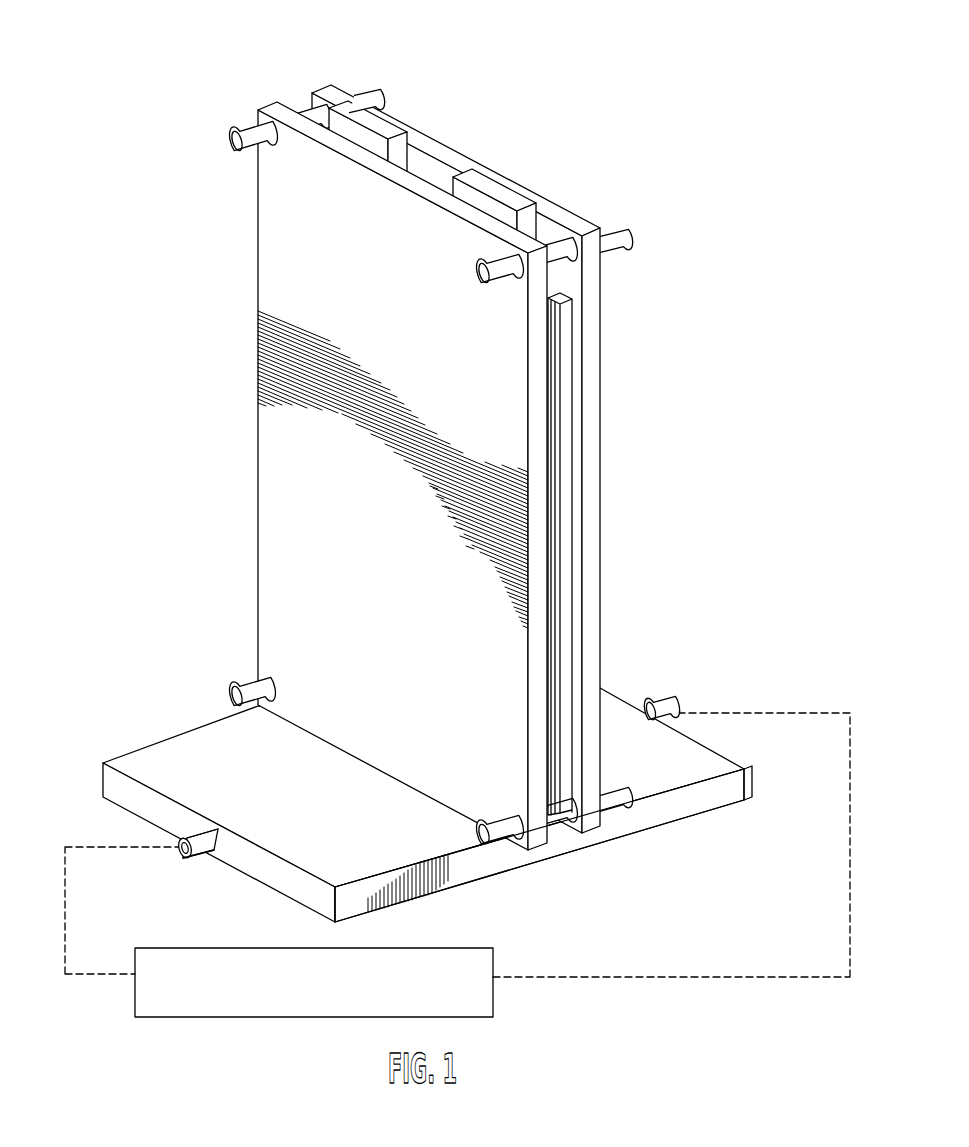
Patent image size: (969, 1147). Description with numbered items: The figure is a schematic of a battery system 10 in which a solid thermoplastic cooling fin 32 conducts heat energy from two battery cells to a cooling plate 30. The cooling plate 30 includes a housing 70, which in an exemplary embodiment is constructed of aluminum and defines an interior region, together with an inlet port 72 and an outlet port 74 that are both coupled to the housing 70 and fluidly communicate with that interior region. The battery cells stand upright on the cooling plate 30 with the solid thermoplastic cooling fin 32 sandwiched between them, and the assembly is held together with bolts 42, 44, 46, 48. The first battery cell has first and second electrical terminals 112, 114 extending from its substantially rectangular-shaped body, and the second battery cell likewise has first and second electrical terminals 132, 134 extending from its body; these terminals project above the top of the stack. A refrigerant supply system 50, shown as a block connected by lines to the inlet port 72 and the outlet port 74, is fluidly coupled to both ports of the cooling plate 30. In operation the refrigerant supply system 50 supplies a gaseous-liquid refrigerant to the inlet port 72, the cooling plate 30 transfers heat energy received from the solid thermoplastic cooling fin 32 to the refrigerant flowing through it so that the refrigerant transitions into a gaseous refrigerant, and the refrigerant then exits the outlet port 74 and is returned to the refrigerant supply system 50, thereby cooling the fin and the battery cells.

The battery system 10 is at (457, 520).
The cooling plate 30 is at (154, 756).
The solid thermoplastic cooling fin 32 is at (557, 783).
The bolt 42 is at (247, 127).
The bolt 44 is at (612, 244).
The bolt 46 is at (245, 690).
The bolt 48 is at (608, 797).
The refrigerant supply system 50 is at (452, 953).
The housing 70 is at (710, 804).
The inlet port 72 is at (194, 856).
The outlet port 74 is at (668, 713).
The first electrical terminal 112 is at (340, 123).
The second electrical terminal 114 is at (463, 190).
The first electrical terminal 132 is at (388, 121).
The second electrical terminal 134 is at (518, 191).